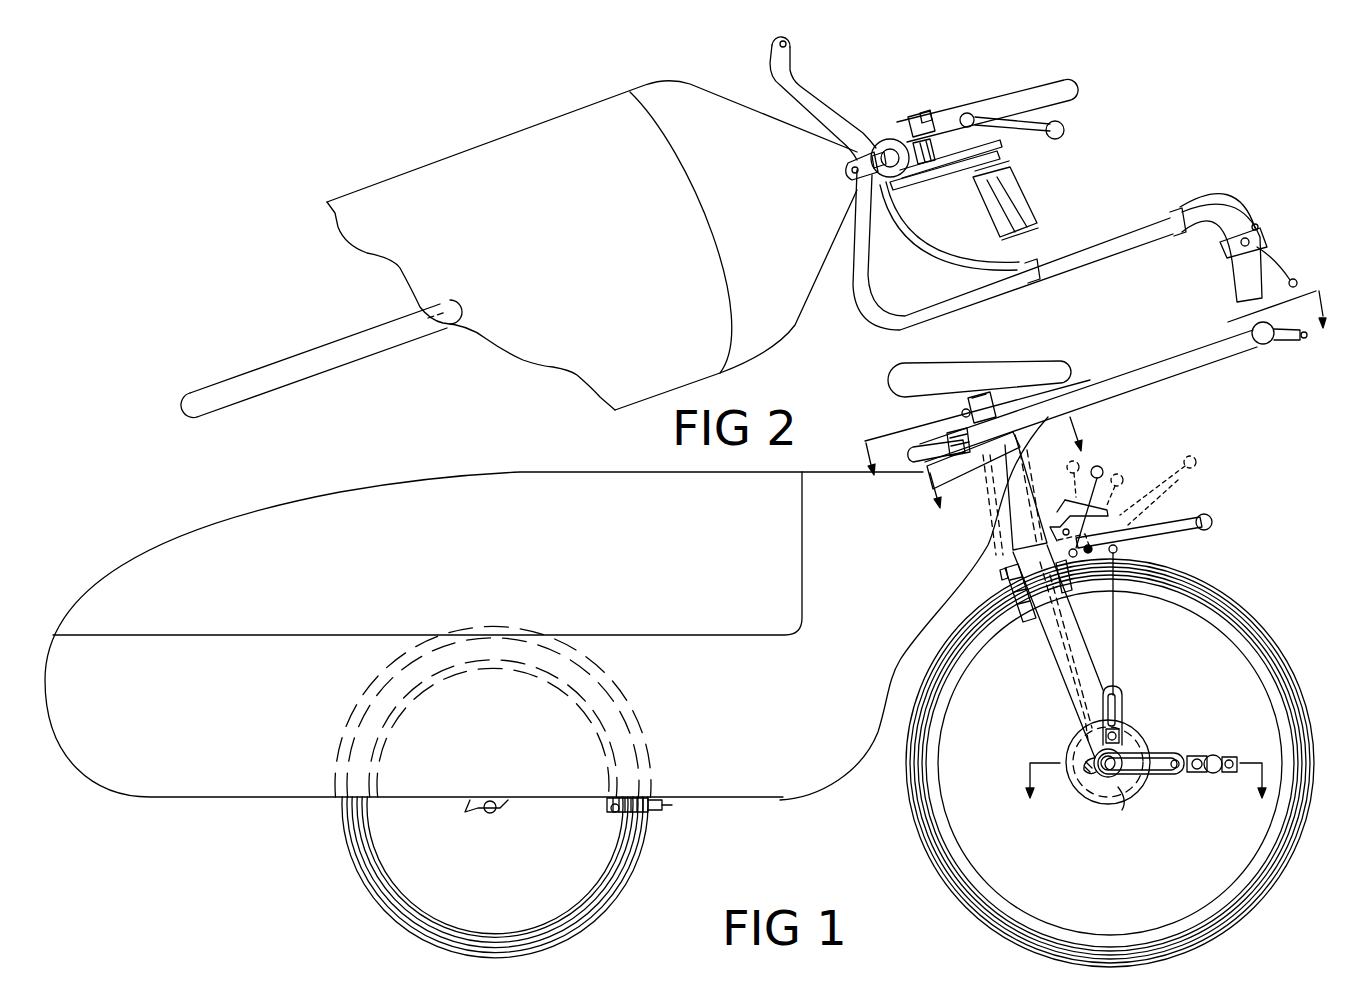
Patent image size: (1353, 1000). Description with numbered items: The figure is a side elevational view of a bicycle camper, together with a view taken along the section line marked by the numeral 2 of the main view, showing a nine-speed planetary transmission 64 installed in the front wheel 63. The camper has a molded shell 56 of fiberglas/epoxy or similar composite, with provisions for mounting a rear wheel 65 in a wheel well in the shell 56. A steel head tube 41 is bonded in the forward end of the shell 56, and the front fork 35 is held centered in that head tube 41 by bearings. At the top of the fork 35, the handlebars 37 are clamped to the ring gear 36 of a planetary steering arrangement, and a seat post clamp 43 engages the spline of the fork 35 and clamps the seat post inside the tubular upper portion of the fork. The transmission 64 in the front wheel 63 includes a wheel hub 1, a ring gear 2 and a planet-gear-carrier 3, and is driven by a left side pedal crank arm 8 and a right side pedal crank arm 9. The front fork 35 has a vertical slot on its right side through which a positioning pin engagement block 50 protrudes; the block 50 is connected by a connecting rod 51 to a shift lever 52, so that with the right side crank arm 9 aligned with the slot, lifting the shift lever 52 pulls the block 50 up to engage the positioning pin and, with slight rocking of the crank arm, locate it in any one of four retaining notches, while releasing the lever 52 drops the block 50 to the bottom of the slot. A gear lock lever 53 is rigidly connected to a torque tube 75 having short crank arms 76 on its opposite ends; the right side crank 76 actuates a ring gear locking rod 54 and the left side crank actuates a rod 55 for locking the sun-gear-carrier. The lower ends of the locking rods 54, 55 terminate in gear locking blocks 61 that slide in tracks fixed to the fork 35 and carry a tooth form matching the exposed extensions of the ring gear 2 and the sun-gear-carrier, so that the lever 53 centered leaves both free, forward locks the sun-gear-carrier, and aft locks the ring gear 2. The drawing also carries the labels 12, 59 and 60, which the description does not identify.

In FIG. 1, the wheel hub 1 is at (1150, 743).
In FIG. 2, the ring gear 2 is at (1277, 309).
In FIG. 1, the ring gear 2 is at (977, 429).
In FIG. 1, the planet-gear-carrier 3 is at (1141, 795).
In FIG. 2, the left side pedal crank arm 8 is at (862, 122).
In FIG. 2, the right side pedal crank arm 9 is at (945, 187).
In FIG. 1, the section indication 12 is at (1020, 464).
In FIG. 1, the front fork 35 is at (1045, 670).
In FIG. 1, the ring gear 36 is at (1015, 440).
In FIG. 2, the handlebars 37 is at (1088, 263).
In FIG. 1, the handlebars 37 is at (1108, 382).
In FIG. 1, the head tube 41 is at (985, 495).
In FIG. 1, the seat post clamp 43 is at (993, 412).
In FIG. 1, the positioning pin engagement block 50 is at (1128, 738).
In FIG. 1, the connecting rod 51 is at (1118, 640).
In FIG. 1, the shift lever 52 is at (1165, 540).
In FIG. 1, the gear lock lever 53 is at (1100, 466).
In FIG. 1, the ring gear locking rod 54 is at (1077, 600).
In FIG. 2, the sun-gear-carrier locking rod 55 is at (895, 125).
In FIG. 2, the molded shell 56 is at (812, 310).
In FIG. 1, the molded shell 56 is at (790, 800).
In FIG. 1, the brake disc 59 is at (1120, 790).
In FIG. 1, the hub 60 is at (1085, 755).
In FIG. 1, the gear locking blocks 61 is at (1082, 732).
In FIG. 1, the front wheel 63 is at (1228, 600).
In FIG. 1, the transmission 64 is at (1138, 805).
In FIG. 2, the rear wheel 65 is at (188, 410).
In FIG. 1, the rear wheel 65 is at (650, 843).
In FIG. 1, the torque tube 75 is at (1120, 530).
In FIG. 1, the short crank arms 76 is at (1120, 555).